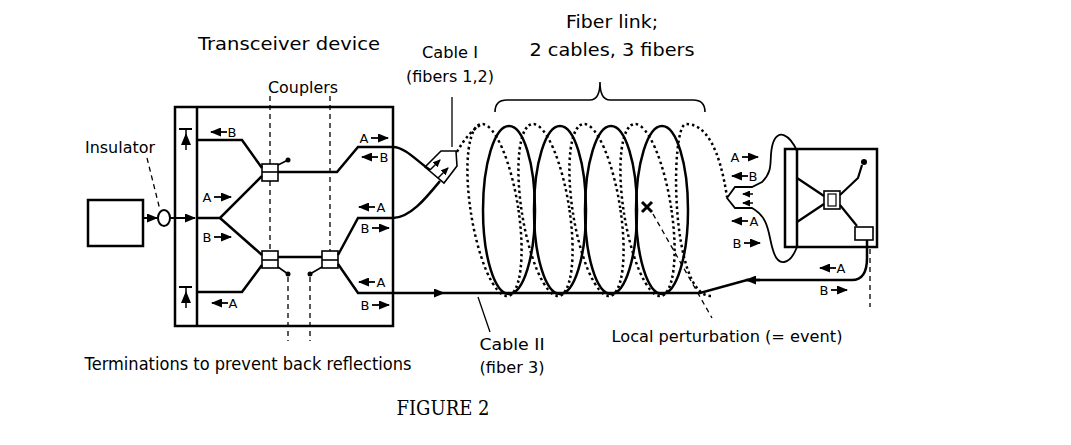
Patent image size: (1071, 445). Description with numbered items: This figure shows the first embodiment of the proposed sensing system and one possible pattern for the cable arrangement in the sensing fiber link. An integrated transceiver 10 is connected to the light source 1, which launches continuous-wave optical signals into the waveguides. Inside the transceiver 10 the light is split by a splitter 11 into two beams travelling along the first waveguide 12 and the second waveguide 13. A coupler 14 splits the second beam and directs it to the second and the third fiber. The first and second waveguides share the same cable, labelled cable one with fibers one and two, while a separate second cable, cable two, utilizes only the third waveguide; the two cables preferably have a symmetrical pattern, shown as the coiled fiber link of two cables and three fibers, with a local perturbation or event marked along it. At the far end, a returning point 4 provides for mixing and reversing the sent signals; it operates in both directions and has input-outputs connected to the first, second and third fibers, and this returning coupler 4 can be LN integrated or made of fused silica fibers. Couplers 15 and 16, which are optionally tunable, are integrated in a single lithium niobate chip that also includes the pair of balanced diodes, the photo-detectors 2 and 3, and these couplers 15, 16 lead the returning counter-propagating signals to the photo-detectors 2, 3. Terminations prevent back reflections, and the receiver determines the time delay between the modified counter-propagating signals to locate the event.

The light source 1 is at (115, 211).
The photo-detector 2 is at (209, 144).
The photo-detector 3 is at (209, 286).
The returning point 4 is at (802, 213).
The integrated transceiver 10 is at (284, 199).
The splitter 11 is at (229, 215).
The first waveguide 12 is at (335, 162).
The second waveguide 13 is at (300, 245).
The coupler 14 is at (351, 255).
The coupler 15 is at (260, 170).
The coupler 16 is at (260, 264).